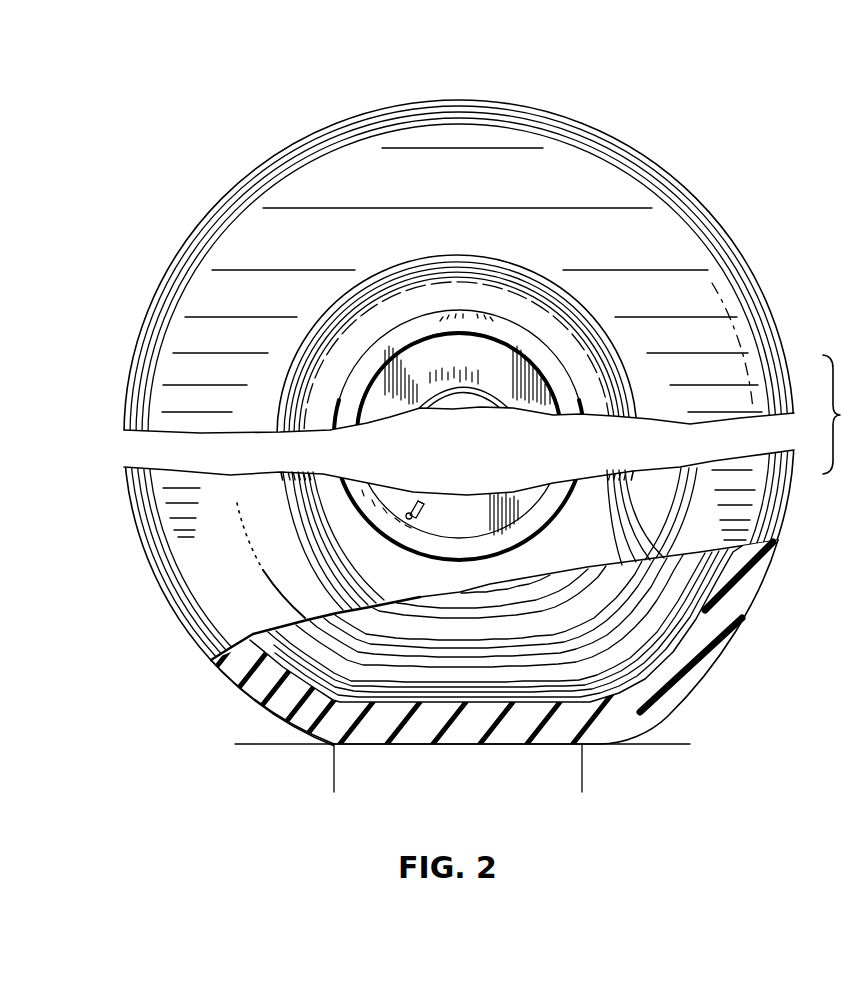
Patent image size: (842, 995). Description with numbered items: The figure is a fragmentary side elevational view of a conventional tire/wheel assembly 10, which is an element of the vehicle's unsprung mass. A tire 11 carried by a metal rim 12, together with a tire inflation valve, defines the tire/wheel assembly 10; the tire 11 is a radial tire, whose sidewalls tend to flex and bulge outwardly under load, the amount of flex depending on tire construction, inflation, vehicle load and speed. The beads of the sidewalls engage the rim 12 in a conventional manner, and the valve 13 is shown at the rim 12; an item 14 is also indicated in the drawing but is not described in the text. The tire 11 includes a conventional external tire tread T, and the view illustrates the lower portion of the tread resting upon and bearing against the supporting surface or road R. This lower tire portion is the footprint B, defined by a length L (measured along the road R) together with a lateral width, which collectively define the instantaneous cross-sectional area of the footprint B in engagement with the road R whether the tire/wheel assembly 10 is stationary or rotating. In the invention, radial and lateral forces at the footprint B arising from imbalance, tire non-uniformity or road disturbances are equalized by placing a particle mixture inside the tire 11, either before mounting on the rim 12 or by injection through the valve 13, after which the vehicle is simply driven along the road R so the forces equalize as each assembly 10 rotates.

The tire/wheel assembly 10 is at (687, 146).
The tire 11 is at (715, 283).
The rim 12 is at (433, 323).
The tire valve 13 is at (427, 517).
The sensor unit 14 is at (417, 502).
The tire tread T is at (414, 745).
The footprint B is at (523, 722).
The length L is at (582, 782).
The road R is at (640, 744).